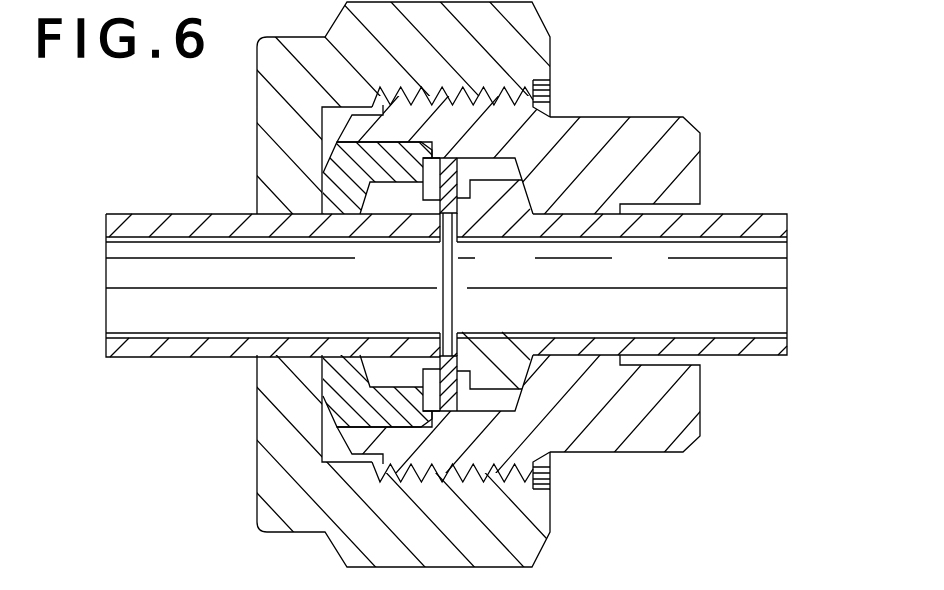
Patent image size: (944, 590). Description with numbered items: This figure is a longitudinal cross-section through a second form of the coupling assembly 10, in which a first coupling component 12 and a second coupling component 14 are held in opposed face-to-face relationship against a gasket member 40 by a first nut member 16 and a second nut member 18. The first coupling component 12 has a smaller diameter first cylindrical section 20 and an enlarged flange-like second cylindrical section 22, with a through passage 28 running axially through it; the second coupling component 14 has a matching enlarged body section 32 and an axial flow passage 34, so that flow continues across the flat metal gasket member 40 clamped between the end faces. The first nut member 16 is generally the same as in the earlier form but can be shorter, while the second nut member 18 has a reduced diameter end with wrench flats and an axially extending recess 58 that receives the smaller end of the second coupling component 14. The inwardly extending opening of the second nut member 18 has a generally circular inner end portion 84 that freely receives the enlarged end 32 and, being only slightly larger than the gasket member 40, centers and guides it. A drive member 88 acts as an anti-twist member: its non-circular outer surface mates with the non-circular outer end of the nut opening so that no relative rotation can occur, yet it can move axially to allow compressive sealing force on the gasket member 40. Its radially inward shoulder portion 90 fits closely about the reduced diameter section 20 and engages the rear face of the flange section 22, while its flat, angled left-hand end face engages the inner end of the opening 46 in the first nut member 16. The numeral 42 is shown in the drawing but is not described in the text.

The coupling assembly 10 is at (677, 85).
The first coupling component 12 is at (148, 362).
The second coupling component 14 is at (755, 360).
The first nut member 16 is at (258, 530).
The second nut member 18 is at (642, 453).
The first cylindrical section 20 is at (232, 212).
The second cylindrical section 22 is at (407, 368).
The through passage 28 is at (150, 275).
The second body section 32 is at (458, 258).
The flow passage 34 is at (760, 268).
The gasket member 40 is at (437, 258).
The lower retaining ring 42 is at (599, 521).
The opening in first nut member 46 is at (555, 100).
The axially extending recess 58 is at (587, 218).
The circular inner end portion 84 is at (488, 390).
The drive member 88 is at (325, 405).
The shoulder portion 90 is at (356, 368).